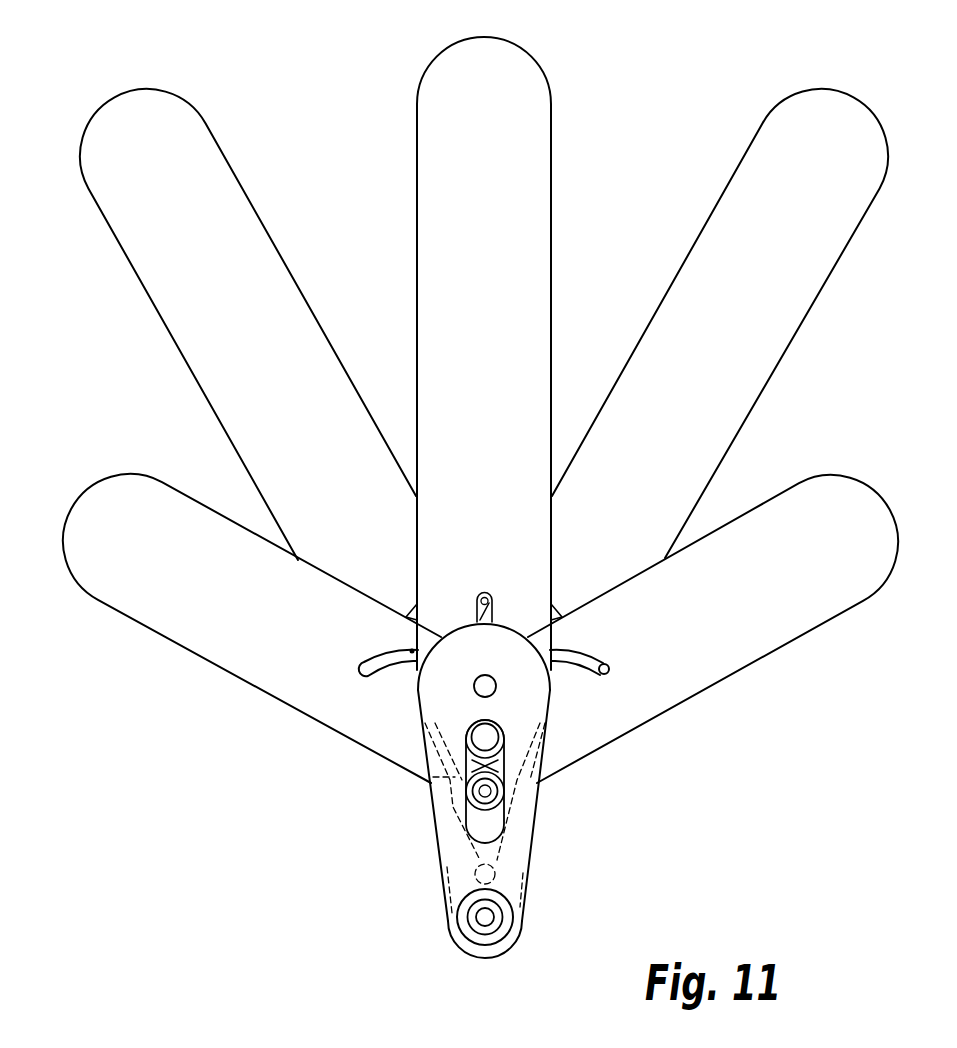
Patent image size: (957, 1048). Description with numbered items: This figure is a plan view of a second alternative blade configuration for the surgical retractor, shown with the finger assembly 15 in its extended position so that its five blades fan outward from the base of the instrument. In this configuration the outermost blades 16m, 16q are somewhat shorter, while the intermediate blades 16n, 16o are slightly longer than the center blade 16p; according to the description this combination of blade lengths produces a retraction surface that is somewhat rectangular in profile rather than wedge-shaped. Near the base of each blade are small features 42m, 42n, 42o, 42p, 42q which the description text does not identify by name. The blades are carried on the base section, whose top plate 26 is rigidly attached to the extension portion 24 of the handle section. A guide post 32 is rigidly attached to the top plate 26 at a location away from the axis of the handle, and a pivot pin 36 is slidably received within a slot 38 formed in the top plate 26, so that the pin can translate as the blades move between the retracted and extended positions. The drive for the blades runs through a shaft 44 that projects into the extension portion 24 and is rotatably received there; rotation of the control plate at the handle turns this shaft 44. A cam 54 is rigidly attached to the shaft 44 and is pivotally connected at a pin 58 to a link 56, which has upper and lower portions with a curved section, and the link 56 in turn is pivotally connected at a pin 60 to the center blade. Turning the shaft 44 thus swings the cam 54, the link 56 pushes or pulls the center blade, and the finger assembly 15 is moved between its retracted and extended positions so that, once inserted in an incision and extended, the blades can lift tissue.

The finger assembly 15 is at (113, 339).
The outermost blade 16m is at (707, 673).
The intermediate blade 16n is at (795, 295).
The intermediate blade 16o is at (515, 163).
The center blade 16p is at (227, 204).
The outermost blade 16q is at (127, 497).
The blade tab 42m is at (600, 672).
The blade tab 42n is at (553, 613).
The blade tab 42o is at (483, 597).
The blade tab 42p is at (410, 613).
The blade tab 42q is at (368, 659).
The extension portion 24 is at (462, 938).
The top plate 26 is at (517, 834).
The guide post 32 is at (478, 686).
The pivot pin 36 is at (490, 737).
The slot 38 is at (480, 823).
The shaft 44 is at (492, 916).
The cam 54 is at (457, 888).
The link 56 is at (457, 839).
The pin 58 is at (495, 858).
The pin 60 is at (485, 792).